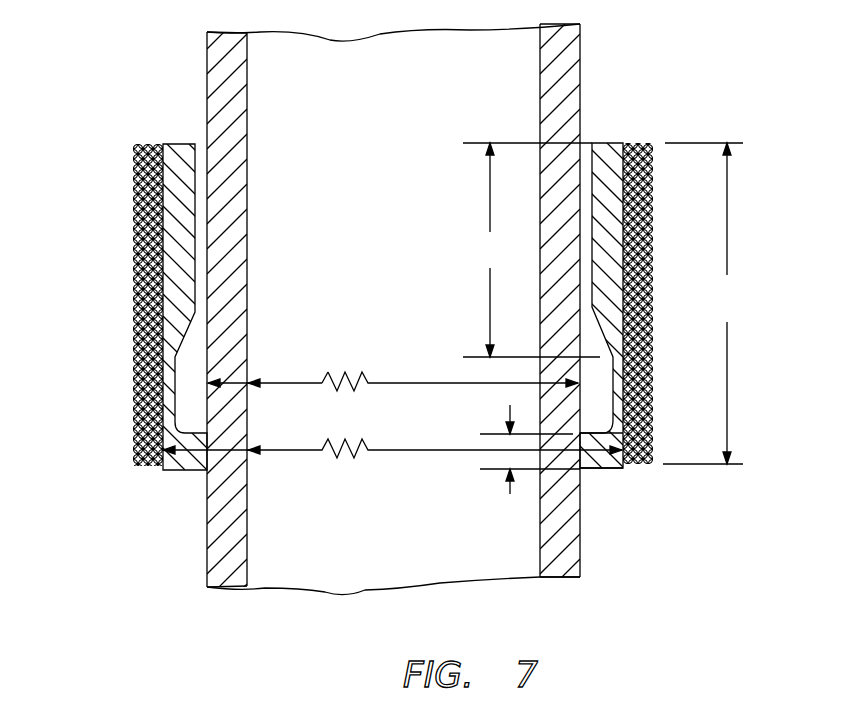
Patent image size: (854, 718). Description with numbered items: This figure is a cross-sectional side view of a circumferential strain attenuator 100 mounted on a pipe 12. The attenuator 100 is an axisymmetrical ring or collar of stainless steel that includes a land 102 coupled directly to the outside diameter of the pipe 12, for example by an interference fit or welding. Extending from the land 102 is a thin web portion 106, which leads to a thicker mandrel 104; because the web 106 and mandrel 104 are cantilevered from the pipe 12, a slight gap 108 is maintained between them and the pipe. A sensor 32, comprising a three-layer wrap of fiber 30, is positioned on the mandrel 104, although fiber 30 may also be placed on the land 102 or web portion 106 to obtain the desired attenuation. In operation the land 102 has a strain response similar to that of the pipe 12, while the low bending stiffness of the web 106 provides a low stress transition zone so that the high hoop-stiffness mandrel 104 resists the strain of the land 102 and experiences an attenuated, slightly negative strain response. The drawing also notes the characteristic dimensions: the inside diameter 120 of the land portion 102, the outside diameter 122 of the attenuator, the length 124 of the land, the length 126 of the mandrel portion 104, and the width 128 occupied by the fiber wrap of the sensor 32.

The pipe 12 is at (583, 33).
The fiber 30 is at (637, 146).
The sensor 32 is at (123, 257).
The attenuator 100 is at (426, 302).
The land 102 is at (616, 469).
The mandrel 104 is at (185, 227).
The web portion 106 is at (176, 388).
The gap 108 is at (587, 146).
The inside diameter 120 is at (408, 380).
The outside diameter 122 is at (392, 453).
The length 124 is at (510, 494).
The length 126 is at (531, 250).
The width 128 is at (707, 303).